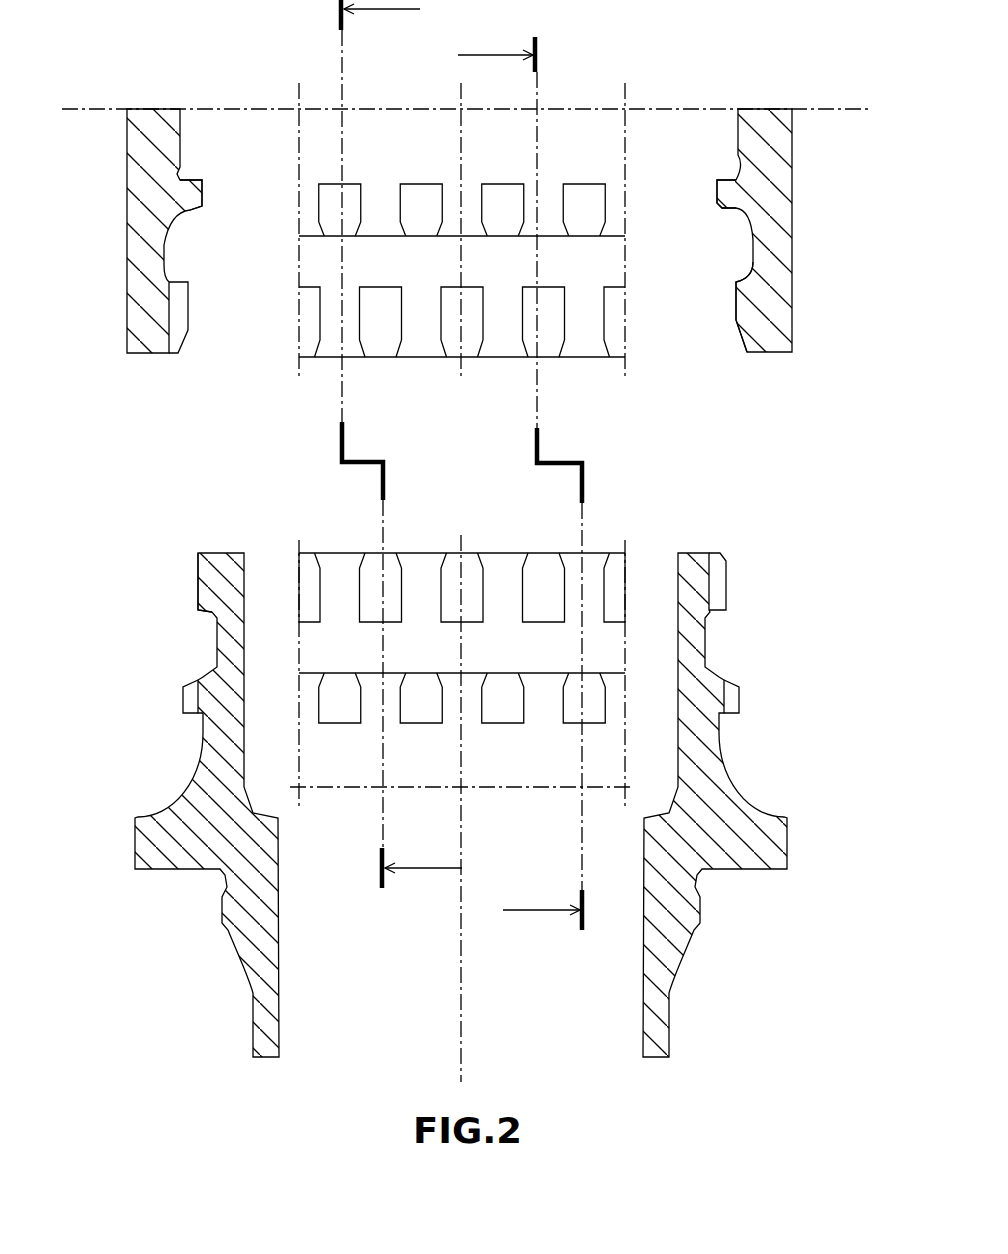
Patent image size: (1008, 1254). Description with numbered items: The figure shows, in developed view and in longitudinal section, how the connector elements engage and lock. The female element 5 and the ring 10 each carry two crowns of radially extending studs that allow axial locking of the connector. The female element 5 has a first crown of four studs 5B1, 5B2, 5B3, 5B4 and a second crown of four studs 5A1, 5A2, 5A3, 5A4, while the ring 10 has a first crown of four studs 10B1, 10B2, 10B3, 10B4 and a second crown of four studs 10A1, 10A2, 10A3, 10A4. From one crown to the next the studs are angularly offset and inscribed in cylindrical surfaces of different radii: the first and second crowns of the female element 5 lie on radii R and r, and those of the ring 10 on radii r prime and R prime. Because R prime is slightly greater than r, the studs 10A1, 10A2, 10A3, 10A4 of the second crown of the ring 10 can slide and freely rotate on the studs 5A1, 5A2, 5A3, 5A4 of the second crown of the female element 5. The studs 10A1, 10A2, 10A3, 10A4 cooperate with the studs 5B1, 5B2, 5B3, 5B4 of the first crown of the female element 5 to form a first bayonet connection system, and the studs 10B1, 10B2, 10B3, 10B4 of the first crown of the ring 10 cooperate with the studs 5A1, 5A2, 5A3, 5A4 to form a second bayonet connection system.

The female element 5 is at (462, 805).
The stud 5A1 is at (240, 603).
The stud 5A2 is at (462, 603).
The stud 5A3 is at (544, 603).
The stud 5A4 is at (561, 603).
The stud 5B1 is at (220, 711).
The stud 5B2 is at (421, 718).
The stud 5B3 is at (503, 718).
The stud 5B4 is at (700, 709).
The ring 10 is at (459, 233).
The stud 10A1 is at (401, 306).
The stud 10A2 is at (380, 307).
The stud 10A3 is at (462, 307).
The stud 10A4 is at (635, 307).
The stud 10B1 is at (270, 196).
The stud 10B2 is at (417, 196).
The stud 10B3 is at (501, 195).
The stud 10B4 is at (646, 196).